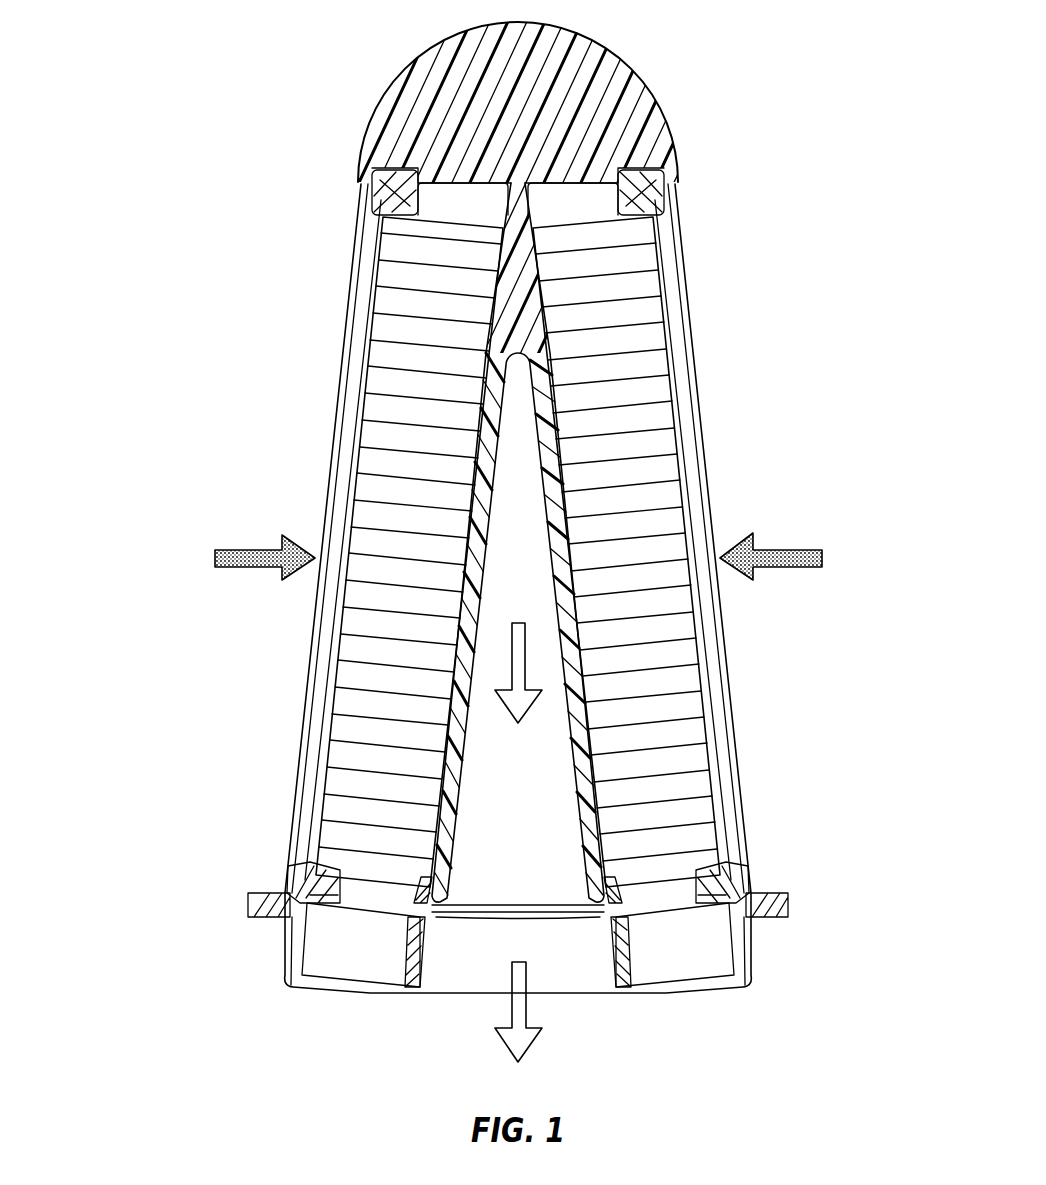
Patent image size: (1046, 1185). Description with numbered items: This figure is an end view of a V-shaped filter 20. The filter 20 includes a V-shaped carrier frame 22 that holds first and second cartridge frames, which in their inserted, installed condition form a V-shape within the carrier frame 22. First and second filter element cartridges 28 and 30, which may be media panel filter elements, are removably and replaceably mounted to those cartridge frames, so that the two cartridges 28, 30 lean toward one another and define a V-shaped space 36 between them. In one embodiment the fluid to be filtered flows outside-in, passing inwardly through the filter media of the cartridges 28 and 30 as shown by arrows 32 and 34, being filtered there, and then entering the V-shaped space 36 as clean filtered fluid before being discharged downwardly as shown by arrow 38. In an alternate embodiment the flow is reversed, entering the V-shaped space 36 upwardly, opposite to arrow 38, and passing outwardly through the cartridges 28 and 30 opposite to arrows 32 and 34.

The V-shaped filter 20 is at (264, 188).
The V-shaped carrier frame 22 is at (348, 292).
The first filter element cartridge 28 is at (400, 402).
The second filter element cartridge 30 is at (636, 402).
The arrow 32 is at (253, 550).
The arrow 34 is at (785, 548).
The V-shaped space 36 is at (504, 532).
The arrow 38 is at (527, 637).